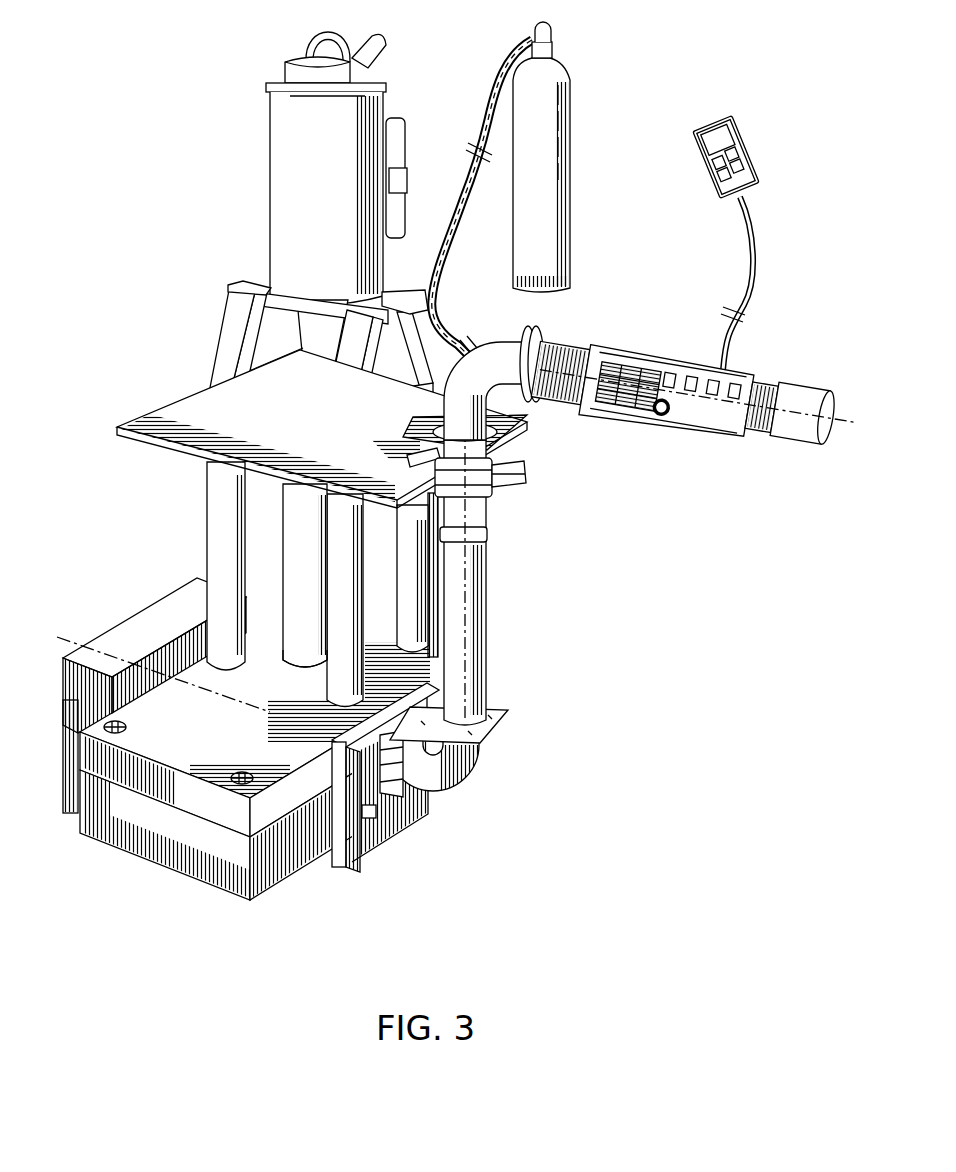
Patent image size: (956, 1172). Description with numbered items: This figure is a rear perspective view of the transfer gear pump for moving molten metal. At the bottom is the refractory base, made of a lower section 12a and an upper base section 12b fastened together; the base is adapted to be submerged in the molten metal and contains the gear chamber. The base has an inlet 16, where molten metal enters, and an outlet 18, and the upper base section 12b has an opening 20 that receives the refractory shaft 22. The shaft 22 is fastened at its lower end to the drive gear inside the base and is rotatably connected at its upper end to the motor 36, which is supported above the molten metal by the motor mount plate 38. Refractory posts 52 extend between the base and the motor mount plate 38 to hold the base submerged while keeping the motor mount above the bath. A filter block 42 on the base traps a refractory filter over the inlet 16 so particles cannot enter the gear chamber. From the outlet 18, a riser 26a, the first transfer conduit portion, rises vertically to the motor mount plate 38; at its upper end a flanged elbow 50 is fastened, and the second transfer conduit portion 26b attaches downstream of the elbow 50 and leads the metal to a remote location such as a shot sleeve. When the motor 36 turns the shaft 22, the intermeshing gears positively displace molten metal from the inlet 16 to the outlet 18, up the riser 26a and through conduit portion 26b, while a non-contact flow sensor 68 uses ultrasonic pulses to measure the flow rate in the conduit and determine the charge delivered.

The lower section 12a is at (188, 828).
The upper base section 12b is at (175, 788).
The inlet 16 is at (334, 667).
The outlet 18 is at (437, 857).
The opening 20 is at (313, 670).
The refractory shaft 22 is at (313, 648).
The riser 26a is at (473, 575).
The second transfer conduit portion 26b is at (685, 423).
The motor 36 is at (302, 207).
The motor mount plate 38 is at (188, 412).
The filter block 42 is at (143, 640).
The flanged elbow 50 is at (502, 342).
The refractory posts 52 is at (208, 512).
The non-contact flow sensor 68 is at (683, 412).